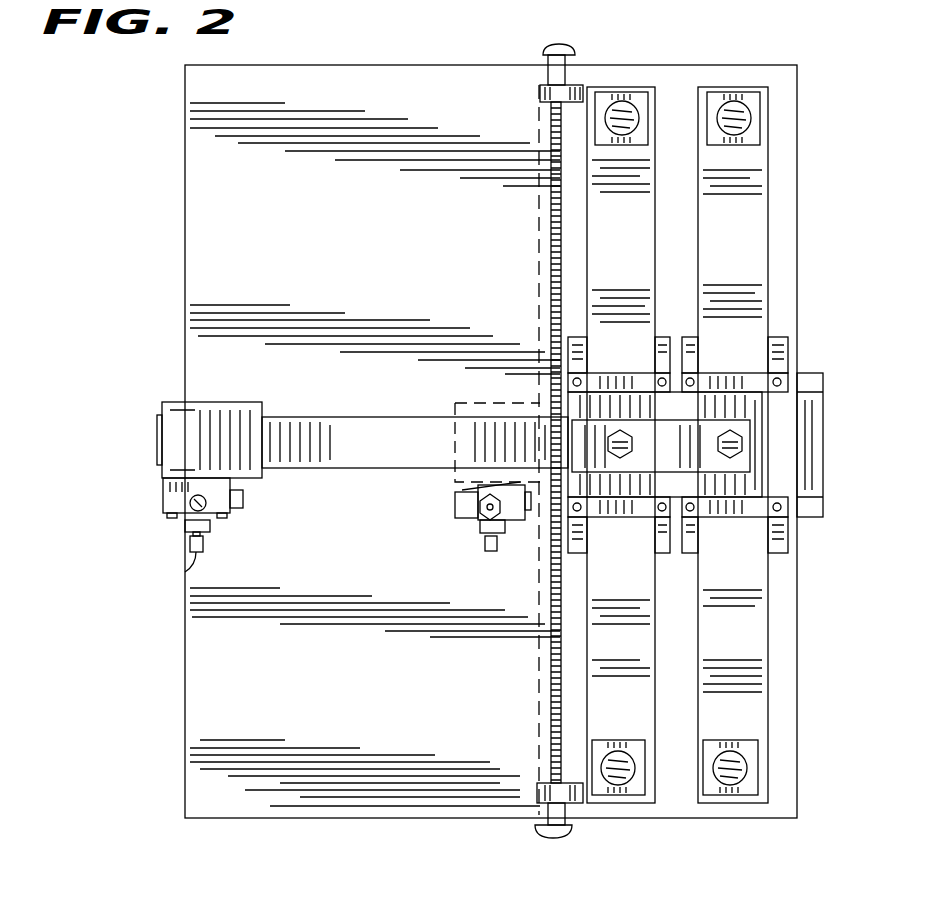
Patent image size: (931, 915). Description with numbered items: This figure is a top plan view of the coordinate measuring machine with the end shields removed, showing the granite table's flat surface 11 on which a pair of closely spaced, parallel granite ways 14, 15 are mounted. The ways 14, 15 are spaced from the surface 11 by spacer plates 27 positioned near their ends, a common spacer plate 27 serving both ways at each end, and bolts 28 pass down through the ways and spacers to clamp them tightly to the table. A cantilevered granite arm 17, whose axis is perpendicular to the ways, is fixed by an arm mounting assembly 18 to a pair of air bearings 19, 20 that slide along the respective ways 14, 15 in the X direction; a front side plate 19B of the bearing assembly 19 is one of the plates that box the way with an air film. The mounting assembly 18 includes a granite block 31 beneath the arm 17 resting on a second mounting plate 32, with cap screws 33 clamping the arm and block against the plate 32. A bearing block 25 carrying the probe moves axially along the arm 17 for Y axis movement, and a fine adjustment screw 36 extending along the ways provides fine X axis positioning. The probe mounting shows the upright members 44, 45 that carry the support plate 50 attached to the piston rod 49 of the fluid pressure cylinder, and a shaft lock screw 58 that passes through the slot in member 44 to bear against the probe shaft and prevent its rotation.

The flat surface 11 is at (205, 135).
The way 14 is at (637, 262).
The way 15 is at (762, 262).
The cantilevered granite arm 17 is at (345, 418).
The arm mounting assembly 18 is at (750, 410).
The air bearing 19 is at (572, 572).
The front side plate 19B is at (578, 335).
The air bearing 20 is at (684, 566).
The bearing block 25 is at (178, 400).
The spacer plate 27 is at (687, 128).
The bolt 28 is at (735, 104).
The granite block 31 is at (680, 482).
The second mounting plate 32 is at (745, 520).
The cap screw 33 is at (727, 432).
The fine adjustment screw 36 is at (548, 730).
The upright member 44 is at (182, 527).
The upright member 45 is at (243, 505).
The piston rod 49 is at (190, 500).
The support plate 50 is at (210, 530).
The shaft lock screw 58 is at (195, 550).